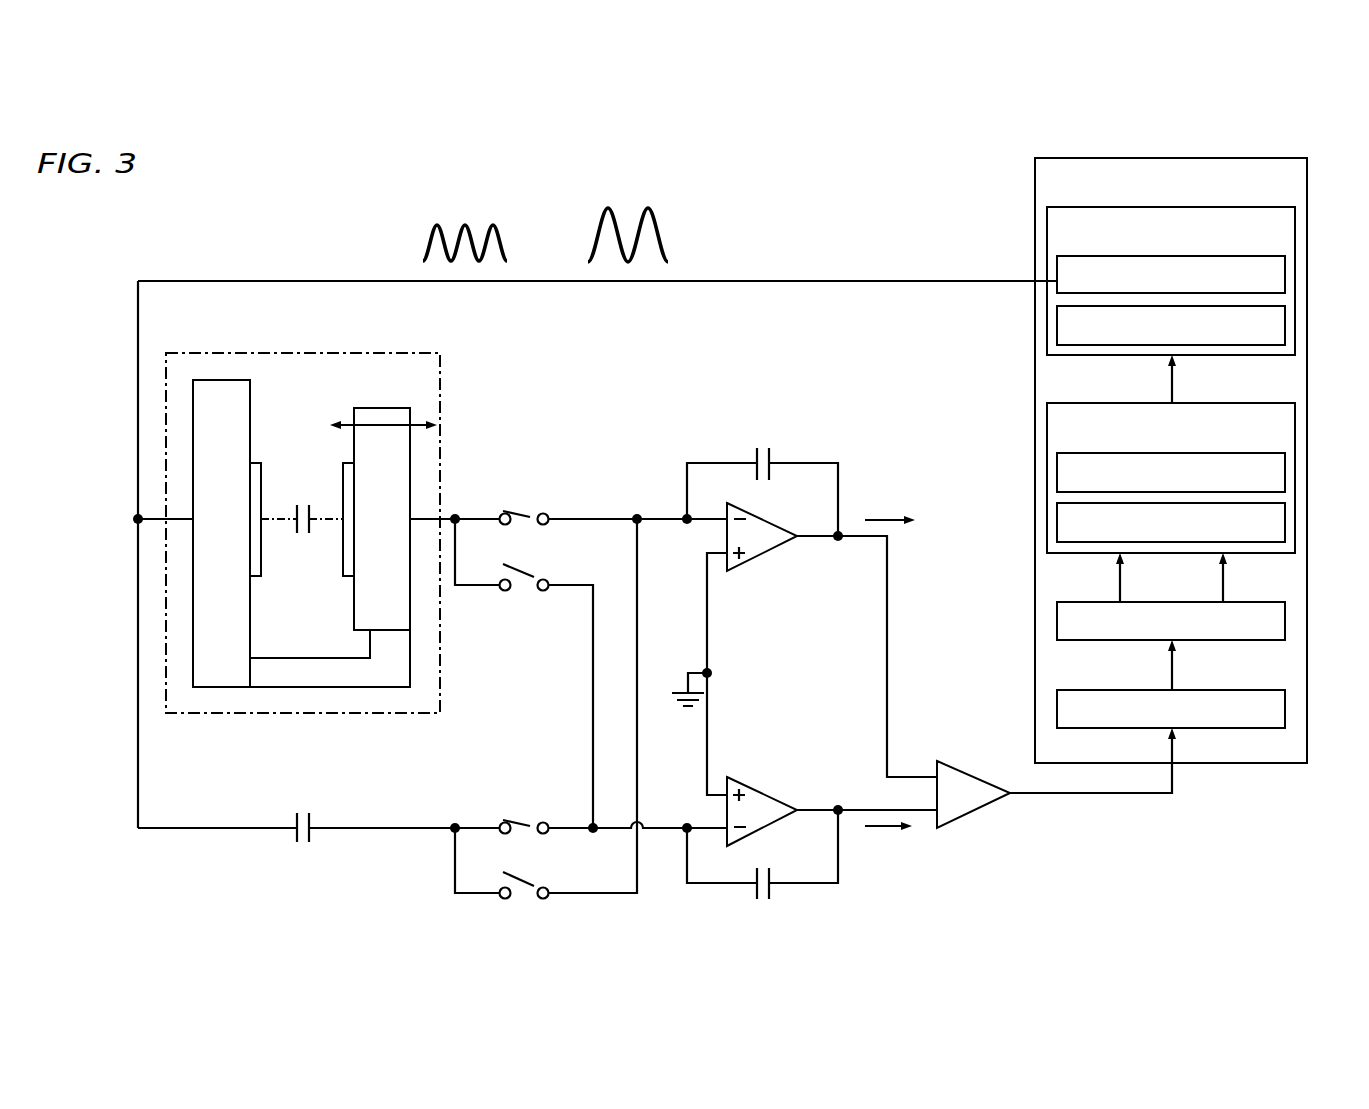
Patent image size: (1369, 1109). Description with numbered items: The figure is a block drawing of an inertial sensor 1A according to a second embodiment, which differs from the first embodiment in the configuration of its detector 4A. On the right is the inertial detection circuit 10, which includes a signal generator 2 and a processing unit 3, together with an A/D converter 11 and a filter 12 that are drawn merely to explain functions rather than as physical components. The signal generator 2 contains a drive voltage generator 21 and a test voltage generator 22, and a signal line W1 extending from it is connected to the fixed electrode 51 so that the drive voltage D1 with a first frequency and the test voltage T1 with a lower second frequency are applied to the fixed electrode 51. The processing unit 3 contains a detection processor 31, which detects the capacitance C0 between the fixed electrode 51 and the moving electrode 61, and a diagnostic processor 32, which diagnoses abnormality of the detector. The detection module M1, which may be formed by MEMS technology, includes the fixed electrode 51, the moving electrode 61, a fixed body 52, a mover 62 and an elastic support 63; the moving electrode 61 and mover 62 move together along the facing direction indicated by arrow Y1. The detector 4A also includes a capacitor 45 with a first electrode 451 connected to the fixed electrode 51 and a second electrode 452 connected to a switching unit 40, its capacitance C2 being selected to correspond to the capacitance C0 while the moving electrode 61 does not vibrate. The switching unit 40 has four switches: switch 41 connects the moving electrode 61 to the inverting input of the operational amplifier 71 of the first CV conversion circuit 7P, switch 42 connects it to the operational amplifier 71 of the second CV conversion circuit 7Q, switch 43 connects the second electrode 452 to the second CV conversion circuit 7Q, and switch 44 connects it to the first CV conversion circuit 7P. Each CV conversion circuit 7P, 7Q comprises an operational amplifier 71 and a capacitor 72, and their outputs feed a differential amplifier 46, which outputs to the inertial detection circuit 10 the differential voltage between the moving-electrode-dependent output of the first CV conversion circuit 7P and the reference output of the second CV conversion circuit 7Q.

The inertial sensor 1A is at (1311, 137).
The inertial detection circuit 10 is at (1267, 162).
The signal generator 2 is at (1197, 276).
The drive voltage generator 21 is at (1285, 274).
The test voltage generator 22 is at (1283, 325).
The processing unit 3 is at (1197, 454).
The detection processor 31 is at (1282, 475).
The diagnostic processor 32 is at (1282, 523).
The filter 12 is at (1282, 620).
The A/D converter 11 is at (1282, 710).
The switching unit 40 is at (588, 695).
The switch 41 is at (517, 513).
The switch 42 is at (522, 593).
The switch 43 is at (517, 822).
The switch 44 is at (522, 900).
The capacitor 45 is at (296, 865).
The first electrode 451 is at (292, 845).
The second electrode 452 is at (312, 845).
The differential amplifier 46 is at (963, 777).
The detector 4A is at (850, 902).
The first CV conversion circuit 7P is at (700, 446).
The second CV conversion circuit 7Q is at (716, 894).
The operational amplifier 71 is at (775, 527).
The capacitor 72 is at (762, 442).
The fixed electrode 51 is at (273, 456).
The fixed body 52 is at (243, 400).
The moving electrode 61 is at (347, 473).
The mover 62 is at (360, 601).
The support 63 is at (353, 688).
The detection module M1 is at (313, 534).
The signal line W1 is at (238, 279).
The arrow Y1 is at (393, 420).
The drive voltage D1 is at (428, 248).
The test voltage T1 is at (657, 248).
The capacitance C0 is at (302, 537).
The capacitance C2 is at (307, 800).